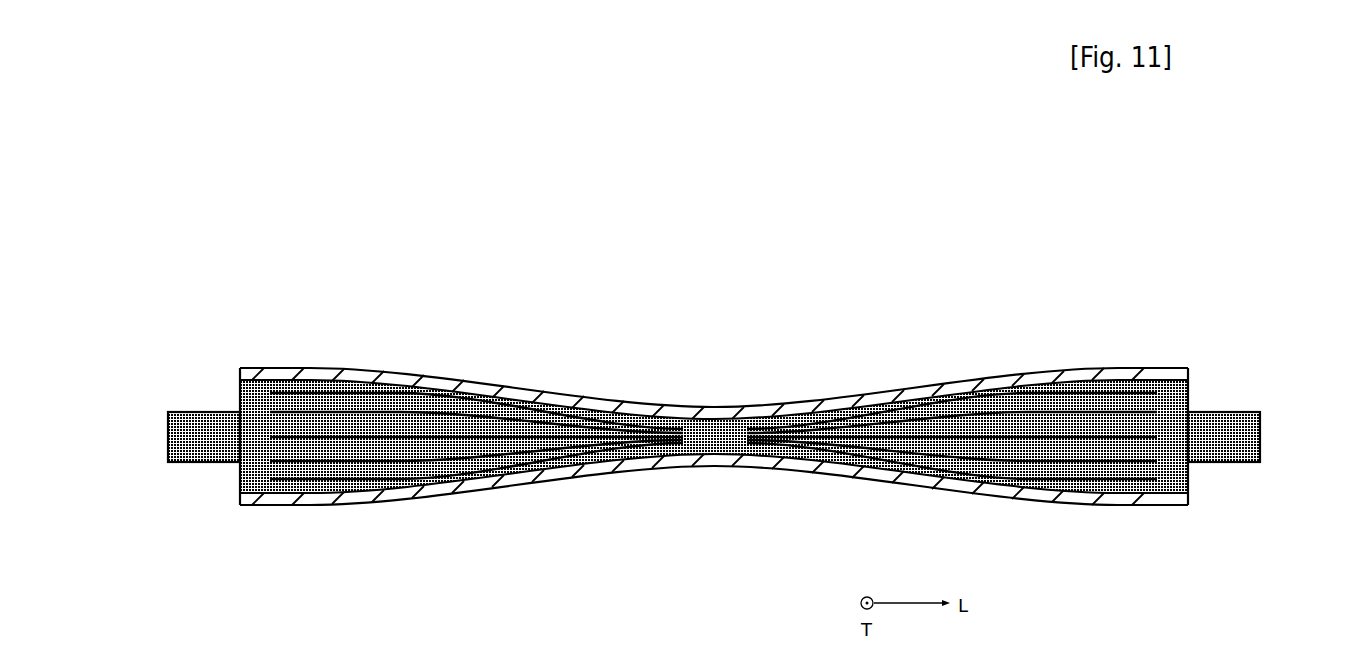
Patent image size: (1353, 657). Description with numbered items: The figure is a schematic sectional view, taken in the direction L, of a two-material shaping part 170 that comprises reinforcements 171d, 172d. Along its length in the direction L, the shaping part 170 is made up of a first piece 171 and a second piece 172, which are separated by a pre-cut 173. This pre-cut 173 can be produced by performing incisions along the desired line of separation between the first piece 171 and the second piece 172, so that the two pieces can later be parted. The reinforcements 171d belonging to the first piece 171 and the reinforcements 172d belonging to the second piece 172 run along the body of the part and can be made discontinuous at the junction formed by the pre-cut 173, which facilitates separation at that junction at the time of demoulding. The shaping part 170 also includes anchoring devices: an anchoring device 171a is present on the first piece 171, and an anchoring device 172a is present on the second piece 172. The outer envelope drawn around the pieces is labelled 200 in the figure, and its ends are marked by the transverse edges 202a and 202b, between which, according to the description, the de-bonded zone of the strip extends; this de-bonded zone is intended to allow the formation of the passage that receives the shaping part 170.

The shaping part 170 is at (703, 401).
The first piece 171 is at (476, 383).
The anchoring device 171a is at (203, 437).
The reinforcements 171d is at (453, 434).
The second piece 172 is at (1020, 427).
The anchoring device 172a is at (1225, 440).
The reinforcements 172d is at (1075, 463).
The pre-cut 173 is at (713, 452).
The sheath 200 is at (1044, 360).
The transverse edge 202a is at (240, 498).
The transverse edge 202b is at (1190, 498).